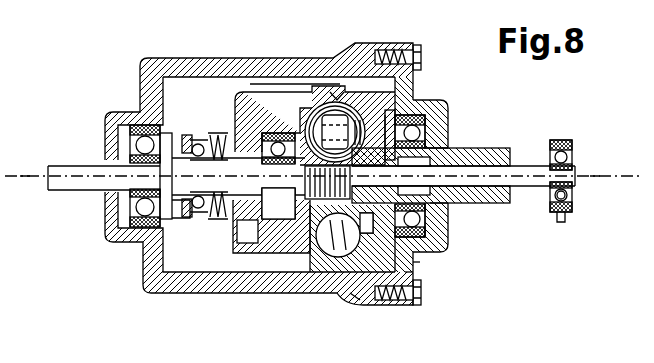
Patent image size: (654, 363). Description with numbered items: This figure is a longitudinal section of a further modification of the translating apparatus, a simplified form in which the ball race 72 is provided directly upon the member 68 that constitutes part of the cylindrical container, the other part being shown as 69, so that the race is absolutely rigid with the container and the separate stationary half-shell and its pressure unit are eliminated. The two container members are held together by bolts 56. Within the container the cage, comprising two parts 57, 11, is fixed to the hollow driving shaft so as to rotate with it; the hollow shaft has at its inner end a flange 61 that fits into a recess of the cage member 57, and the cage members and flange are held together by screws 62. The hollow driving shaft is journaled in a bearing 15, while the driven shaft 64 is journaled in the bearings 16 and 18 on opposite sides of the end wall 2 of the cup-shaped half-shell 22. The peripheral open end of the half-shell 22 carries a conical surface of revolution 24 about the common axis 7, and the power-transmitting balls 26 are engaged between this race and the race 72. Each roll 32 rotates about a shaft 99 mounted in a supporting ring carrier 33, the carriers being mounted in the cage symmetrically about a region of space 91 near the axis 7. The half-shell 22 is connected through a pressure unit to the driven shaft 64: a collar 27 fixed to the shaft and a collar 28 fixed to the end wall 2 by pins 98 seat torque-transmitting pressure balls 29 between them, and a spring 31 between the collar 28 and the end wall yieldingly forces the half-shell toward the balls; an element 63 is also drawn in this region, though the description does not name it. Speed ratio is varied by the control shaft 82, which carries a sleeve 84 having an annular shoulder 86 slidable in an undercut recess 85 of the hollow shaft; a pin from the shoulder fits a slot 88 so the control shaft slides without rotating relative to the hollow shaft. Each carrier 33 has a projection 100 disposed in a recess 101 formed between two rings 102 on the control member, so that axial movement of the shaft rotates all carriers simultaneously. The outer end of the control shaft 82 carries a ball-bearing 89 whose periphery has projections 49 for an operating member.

The common axis 7 is at (310, 176).
The end wall 2 is at (225, 252).
The cage part 11 is at (250, 233).
The bearing 15 is at (450, 235).
The bearing 16 is at (133, 130).
The bearing 18 is at (283, 242).
The cup-shaped half-shell 22 is at (252, 100).
The surface of revolution 24 is at (328, 100).
The power-transmitting balls 26 is at (345, 255).
The collar 27 is at (185, 213).
The collar 28 is at (211, 213).
The torque-transmitting pressure balls 29 is at (195, 145).
The spring 31 is at (220, 137).
The roll 32 is at (323, 112).
The supporting ring carrier 33 is at (325, 127).
The projections 49 is at (563, 140).
The bolts 56 is at (420, 55).
The cage part 57 is at (380, 110).
The flange 61 is at (403, 117).
The screws 62 is at (358, 302).
The spring 63 is at (262, 135).
The driven shaft 64 is at (75, 183).
The container member 68 is at (422, 262).
The container member 69 is at (158, 62).
The ball race 72 is at (410, 272).
The control shaft 82 is at (525, 188).
The sleeve 84 is at (402, 147).
The undercut cylindrical recess 85 is at (417, 162).
The annular shoulder 86 is at (457, 187).
The slot 88 is at (470, 178).
The ball-bearing 89 is at (572, 195).
The region of space 91 is at (368, 283).
The pins 98 is at (205, 215).
The shaft 99 is at (357, 133).
The projection 100 is at (440, 210).
The recess 101 is at (327, 197).
The rings 102 is at (336, 240).